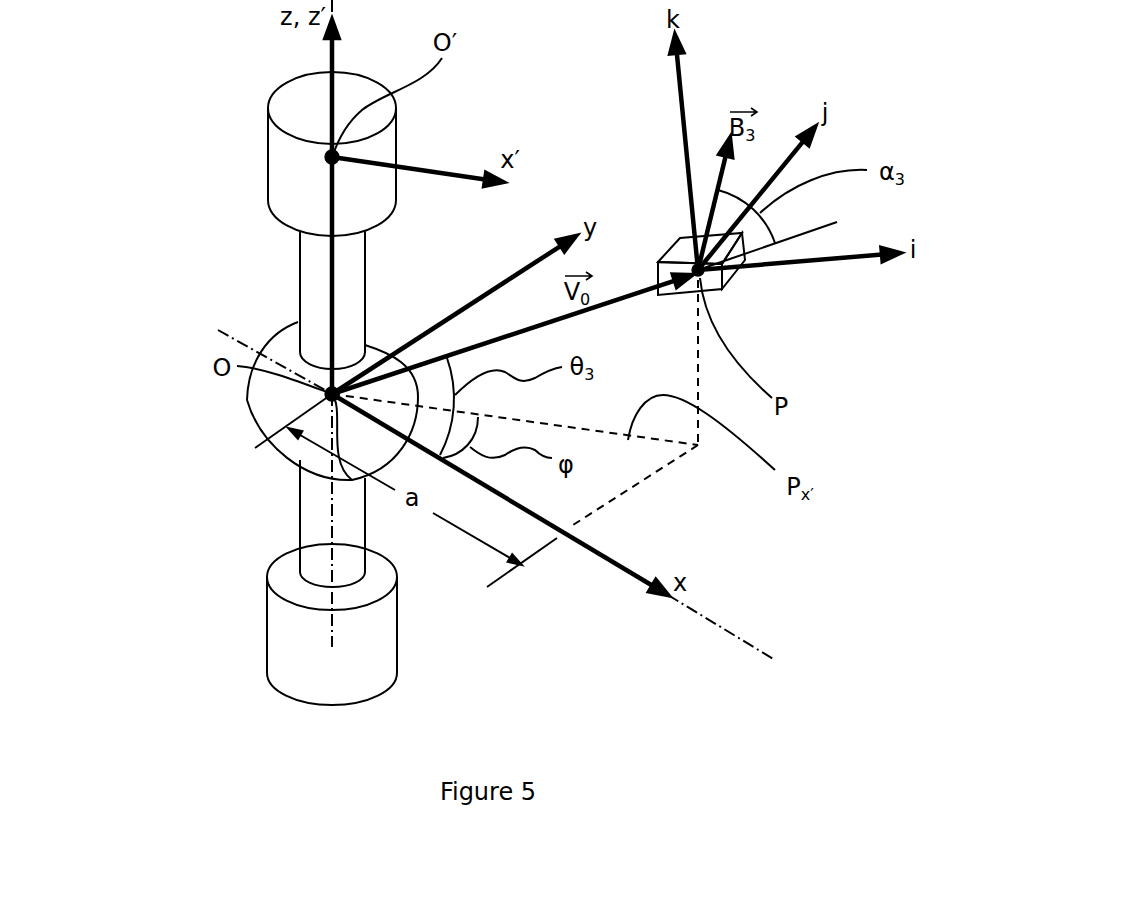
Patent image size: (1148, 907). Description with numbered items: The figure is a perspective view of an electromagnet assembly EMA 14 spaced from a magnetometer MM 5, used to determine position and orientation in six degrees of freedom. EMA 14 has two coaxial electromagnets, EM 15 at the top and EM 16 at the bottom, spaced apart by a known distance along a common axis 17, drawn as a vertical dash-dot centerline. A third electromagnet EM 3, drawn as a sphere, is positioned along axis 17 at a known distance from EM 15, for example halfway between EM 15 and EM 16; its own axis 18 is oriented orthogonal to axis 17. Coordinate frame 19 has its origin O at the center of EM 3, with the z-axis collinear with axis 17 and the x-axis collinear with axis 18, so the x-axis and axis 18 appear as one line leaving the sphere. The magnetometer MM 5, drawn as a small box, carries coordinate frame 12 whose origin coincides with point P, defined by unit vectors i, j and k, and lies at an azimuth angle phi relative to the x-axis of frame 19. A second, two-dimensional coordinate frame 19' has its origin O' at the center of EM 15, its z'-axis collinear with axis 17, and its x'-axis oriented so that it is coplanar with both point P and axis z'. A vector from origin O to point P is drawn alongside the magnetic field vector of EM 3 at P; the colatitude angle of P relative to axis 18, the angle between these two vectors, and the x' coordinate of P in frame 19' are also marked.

The third electromagnet 3 is at (262, 414).
The magnetometer 5 is at (740, 294).
The coordinate frame 12 is at (668, 119).
The electromagnet assembly 14 is at (148, 258).
The electromagnet 15 is at (268, 156).
The electromagnet 16 is at (285, 664).
The axis 17 is at (314, 556).
The axis 18 is at (707, 633).
The coordinate frame 19 is at (529, 494).
The coordinate frame 19' is at (420, 134).